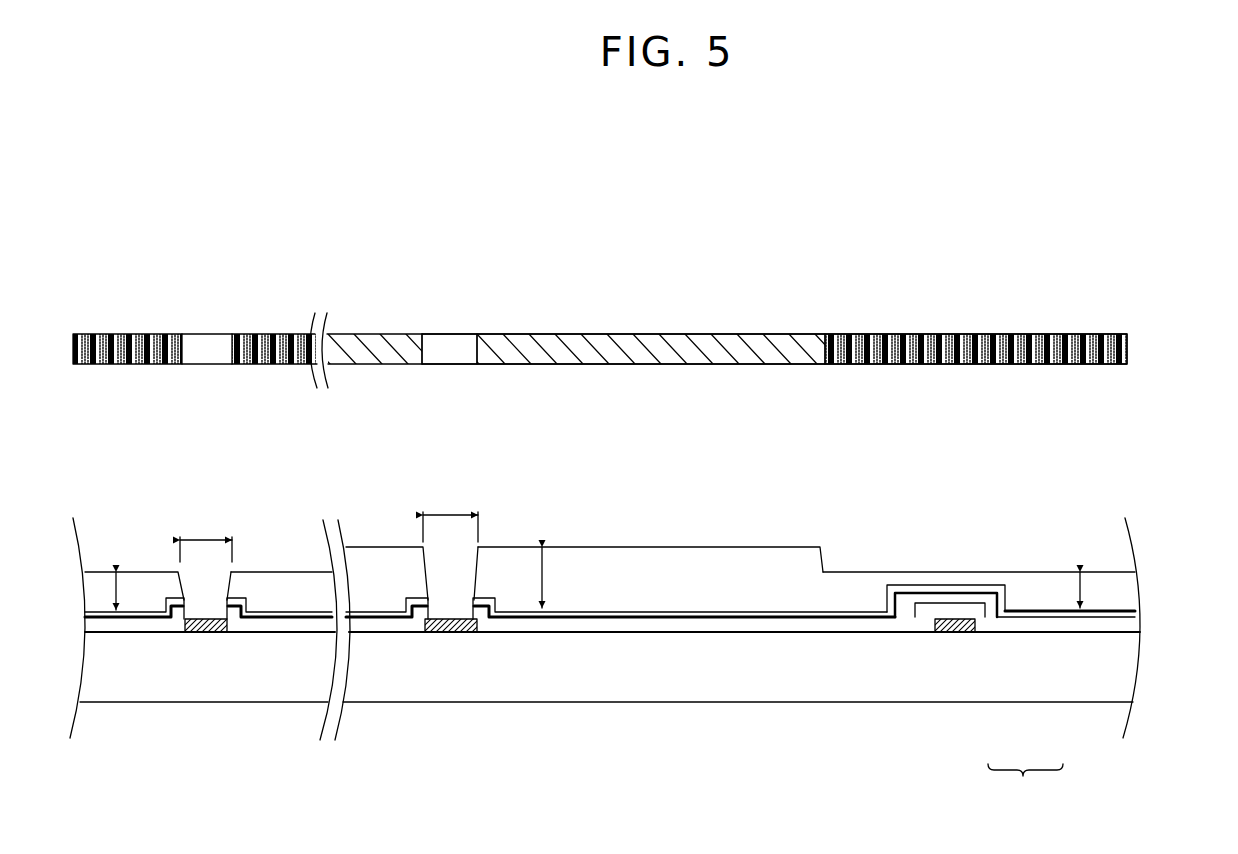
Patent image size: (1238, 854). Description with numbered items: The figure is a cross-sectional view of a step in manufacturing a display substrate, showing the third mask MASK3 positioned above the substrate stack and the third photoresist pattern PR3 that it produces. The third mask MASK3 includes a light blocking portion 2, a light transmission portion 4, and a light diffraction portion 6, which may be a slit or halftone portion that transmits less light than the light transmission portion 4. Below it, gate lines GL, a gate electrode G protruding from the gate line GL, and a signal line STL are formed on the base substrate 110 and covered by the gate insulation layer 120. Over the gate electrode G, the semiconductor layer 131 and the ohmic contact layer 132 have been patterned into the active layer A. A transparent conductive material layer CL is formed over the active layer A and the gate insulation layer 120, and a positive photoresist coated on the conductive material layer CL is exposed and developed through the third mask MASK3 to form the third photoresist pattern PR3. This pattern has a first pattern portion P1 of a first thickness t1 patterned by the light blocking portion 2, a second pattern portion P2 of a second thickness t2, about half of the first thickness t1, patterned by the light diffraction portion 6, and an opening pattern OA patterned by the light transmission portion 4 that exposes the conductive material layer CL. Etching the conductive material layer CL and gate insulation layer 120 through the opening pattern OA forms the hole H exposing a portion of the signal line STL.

The third mask MASK3 is at (654, 329).
The light transmission portion 4 is at (450, 345).
The light blocking portion 2 is at (634, 345).
The light diffraction portion 6 is at (976, 322).
The base substrate 110 is at (1133, 677).
The gate insulation layer 120 is at (1133, 622).
The conductive material layer CL is at (1135, 611).
The semiconductor layer 131 is at (993, 618).
The ohmic contact layer 132 is at (1009, 612).
The active layer A is at (1025, 783).
The gate electrode G is at (953, 632).
The gate line GL is at (207, 632).
The signal line STL is at (451, 632).
The third photoresist pattern PR3 is at (610, 531).
The first pattern portion P1 is at (671, 548).
The second pattern portion P2 is at (131, 572).
The opening pattern OA is at (329, 526).
The hole H is at (452, 612).
The first thickness t1 is at (556, 577).
The second thickness t2 is at (612, 591).